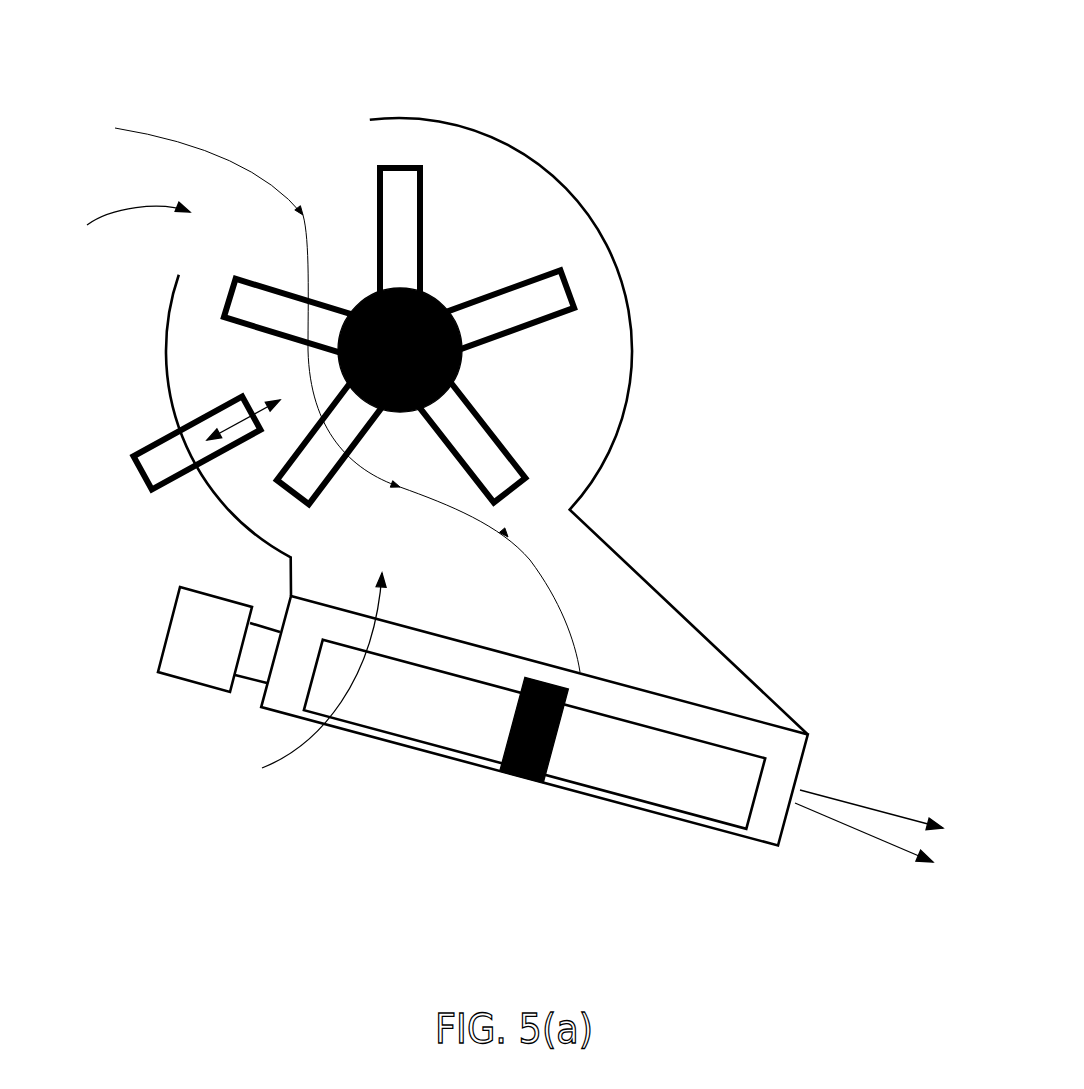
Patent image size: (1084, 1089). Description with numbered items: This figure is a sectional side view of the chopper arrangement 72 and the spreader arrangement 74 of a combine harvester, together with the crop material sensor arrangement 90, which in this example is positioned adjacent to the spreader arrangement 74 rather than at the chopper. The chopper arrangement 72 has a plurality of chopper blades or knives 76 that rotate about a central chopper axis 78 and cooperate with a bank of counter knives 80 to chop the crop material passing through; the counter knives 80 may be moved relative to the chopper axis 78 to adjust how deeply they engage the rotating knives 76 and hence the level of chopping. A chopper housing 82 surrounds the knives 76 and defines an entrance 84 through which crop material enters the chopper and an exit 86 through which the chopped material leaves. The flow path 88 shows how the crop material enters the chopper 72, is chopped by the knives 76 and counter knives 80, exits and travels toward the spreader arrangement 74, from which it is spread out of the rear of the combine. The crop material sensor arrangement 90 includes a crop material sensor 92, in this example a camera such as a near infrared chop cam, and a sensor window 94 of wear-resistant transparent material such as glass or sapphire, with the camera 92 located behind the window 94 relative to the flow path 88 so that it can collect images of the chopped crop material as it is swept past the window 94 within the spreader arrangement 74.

The chopper arrangement 72 is at (690, 168).
The spreader arrangement 74 is at (410, 815).
The chopper blades or knives 76 is at (567, 290).
The central chopper axis 78 is at (460, 363).
The bank of counter knives 80 is at (150, 490).
The chopper housing 82 is at (490, 134).
The entrance 84 is at (121, 225).
The exit 86 is at (305, 678).
The flow path 88 is at (217, 145).
The crop material sensor arrangement 90 is at (177, 704).
The crop material sensor 92 is at (160, 662).
The sensor window 94 is at (247, 680).